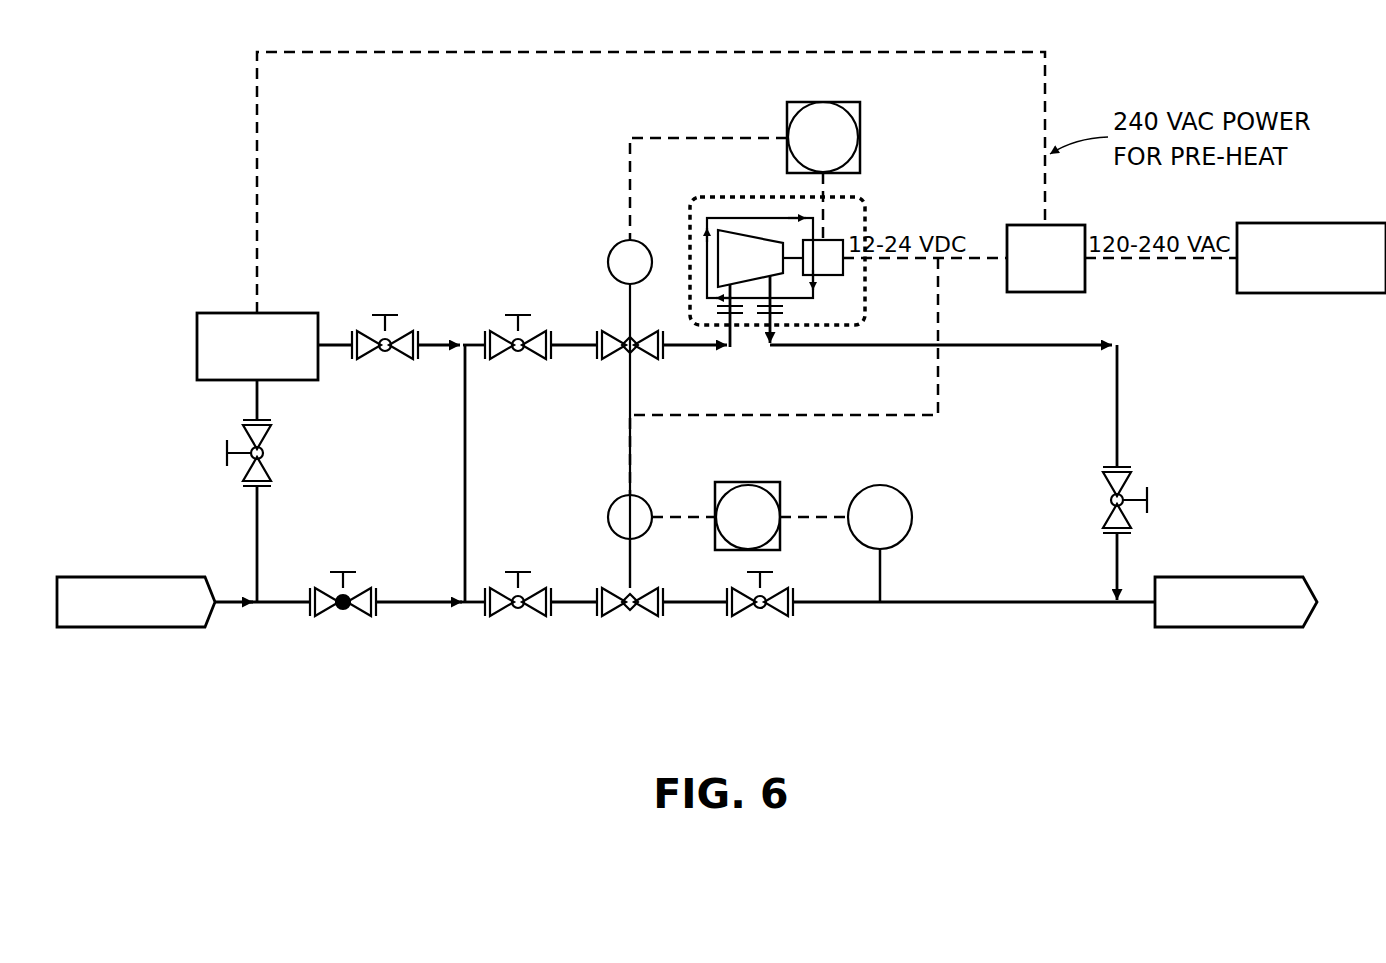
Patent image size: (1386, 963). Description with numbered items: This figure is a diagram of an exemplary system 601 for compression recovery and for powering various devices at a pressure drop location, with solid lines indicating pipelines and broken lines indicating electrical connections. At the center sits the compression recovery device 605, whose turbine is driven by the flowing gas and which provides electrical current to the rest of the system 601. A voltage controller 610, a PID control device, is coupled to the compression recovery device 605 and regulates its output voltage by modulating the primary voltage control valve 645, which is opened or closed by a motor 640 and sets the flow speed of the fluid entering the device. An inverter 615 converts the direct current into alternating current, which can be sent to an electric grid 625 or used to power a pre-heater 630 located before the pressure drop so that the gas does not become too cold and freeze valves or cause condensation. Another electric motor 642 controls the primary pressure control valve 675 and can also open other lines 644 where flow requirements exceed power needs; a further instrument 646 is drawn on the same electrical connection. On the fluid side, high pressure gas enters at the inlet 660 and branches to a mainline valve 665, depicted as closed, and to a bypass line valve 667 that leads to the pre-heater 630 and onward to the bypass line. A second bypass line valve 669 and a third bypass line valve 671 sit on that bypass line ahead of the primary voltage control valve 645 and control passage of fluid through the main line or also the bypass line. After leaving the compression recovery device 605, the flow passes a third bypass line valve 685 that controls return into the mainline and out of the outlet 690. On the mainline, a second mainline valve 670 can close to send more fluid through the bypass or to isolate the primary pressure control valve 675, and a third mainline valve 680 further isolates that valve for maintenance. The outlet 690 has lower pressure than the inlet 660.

The system 601 is at (225, 120).
The compression recovery device 605 is at (866, 198).
The voltage controller 610 is at (780, 113).
The inverter 615 is at (1046, 258).
The electric grid 625 is at (1311, 258).
The pre-heater 630 is at (257, 346).
The motor 640 is at (623, 177).
The electric motor 642 is at (607, 497).
The other lines 644 is at (781, 516).
The primary voltage control valve 645 is at (598, 318).
The sensor 646 is at (880, 543).
The inlet 660 is at (136, 602).
The mainline valve 665 is at (335, 622).
The bypass line valve 667 is at (220, 440).
The second bypass line valve 669 is at (355, 322).
The second mainline valve 670 is at (515, 622).
The third bypass line valve 671 is at (486, 318).
The primary pressure control valve 675 is at (637, 622).
The third mainline valve 680 is at (778, 622).
The third bypass line valve 685 is at (1140, 478).
The outlet 690 is at (1236, 602).